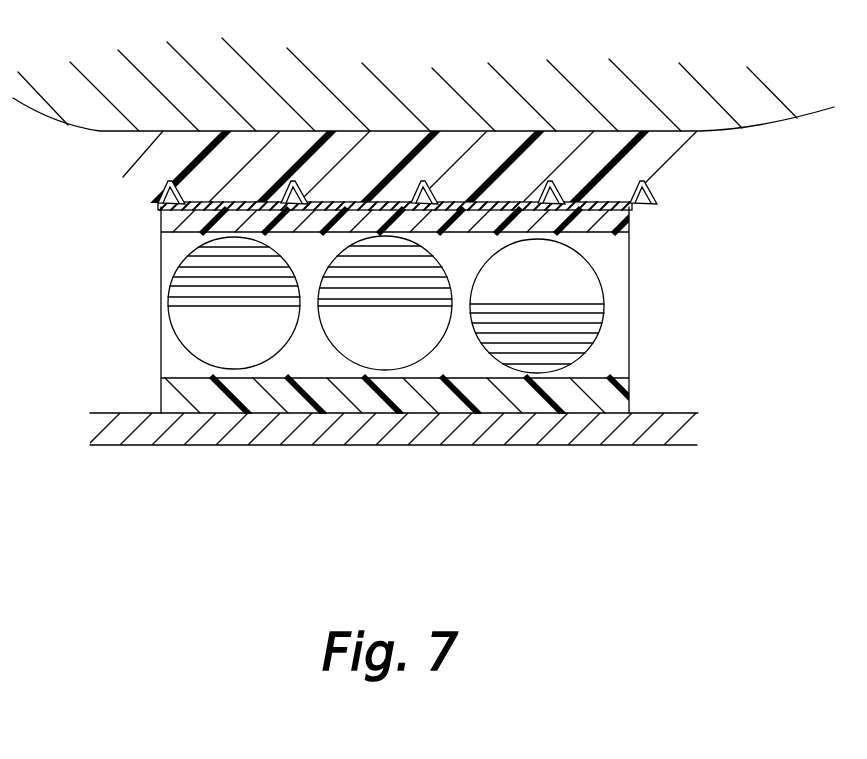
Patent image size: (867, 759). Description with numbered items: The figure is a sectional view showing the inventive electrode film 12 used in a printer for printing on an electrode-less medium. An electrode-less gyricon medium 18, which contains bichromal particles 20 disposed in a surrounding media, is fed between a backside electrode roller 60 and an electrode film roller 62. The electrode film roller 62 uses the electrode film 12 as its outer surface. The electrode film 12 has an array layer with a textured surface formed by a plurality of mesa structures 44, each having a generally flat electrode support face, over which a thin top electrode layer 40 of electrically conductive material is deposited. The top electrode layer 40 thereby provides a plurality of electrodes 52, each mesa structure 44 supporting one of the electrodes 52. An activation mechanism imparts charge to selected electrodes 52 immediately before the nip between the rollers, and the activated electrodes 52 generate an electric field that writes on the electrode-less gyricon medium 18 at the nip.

The electrode film 12 is at (467, 188).
The electrode-less gyricon medium 18 is at (442, 311).
The bichromal particles 20 is at (183, 326).
The top electrode layer 40 is at (166, 196).
The mesa structures 44 is at (632, 204).
The electrodes 52 is at (584, 201).
The backside electrode roller 60 is at (588, 432).
The electrode film roller 62 is at (95, 112).